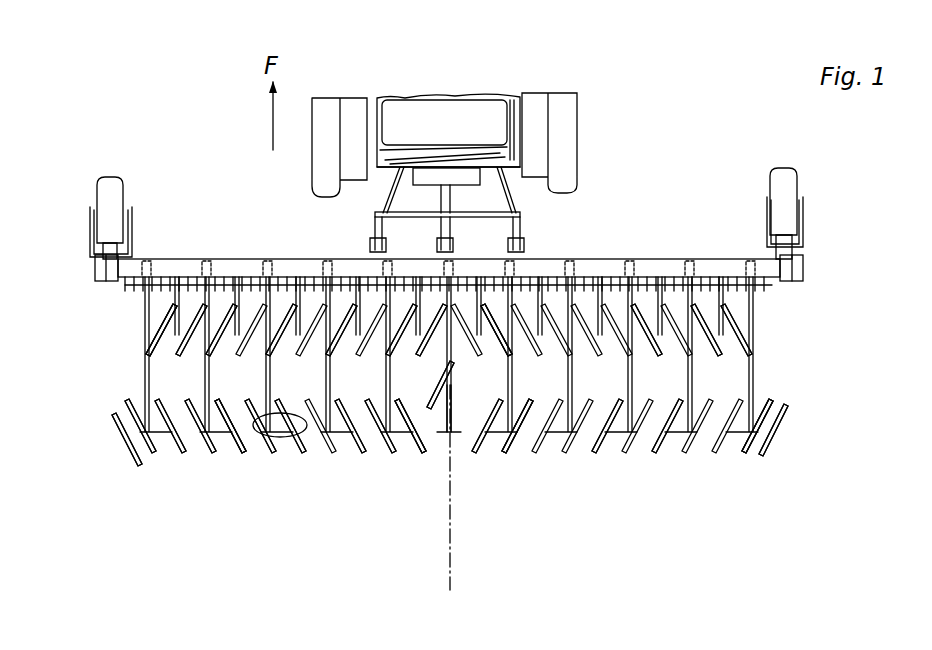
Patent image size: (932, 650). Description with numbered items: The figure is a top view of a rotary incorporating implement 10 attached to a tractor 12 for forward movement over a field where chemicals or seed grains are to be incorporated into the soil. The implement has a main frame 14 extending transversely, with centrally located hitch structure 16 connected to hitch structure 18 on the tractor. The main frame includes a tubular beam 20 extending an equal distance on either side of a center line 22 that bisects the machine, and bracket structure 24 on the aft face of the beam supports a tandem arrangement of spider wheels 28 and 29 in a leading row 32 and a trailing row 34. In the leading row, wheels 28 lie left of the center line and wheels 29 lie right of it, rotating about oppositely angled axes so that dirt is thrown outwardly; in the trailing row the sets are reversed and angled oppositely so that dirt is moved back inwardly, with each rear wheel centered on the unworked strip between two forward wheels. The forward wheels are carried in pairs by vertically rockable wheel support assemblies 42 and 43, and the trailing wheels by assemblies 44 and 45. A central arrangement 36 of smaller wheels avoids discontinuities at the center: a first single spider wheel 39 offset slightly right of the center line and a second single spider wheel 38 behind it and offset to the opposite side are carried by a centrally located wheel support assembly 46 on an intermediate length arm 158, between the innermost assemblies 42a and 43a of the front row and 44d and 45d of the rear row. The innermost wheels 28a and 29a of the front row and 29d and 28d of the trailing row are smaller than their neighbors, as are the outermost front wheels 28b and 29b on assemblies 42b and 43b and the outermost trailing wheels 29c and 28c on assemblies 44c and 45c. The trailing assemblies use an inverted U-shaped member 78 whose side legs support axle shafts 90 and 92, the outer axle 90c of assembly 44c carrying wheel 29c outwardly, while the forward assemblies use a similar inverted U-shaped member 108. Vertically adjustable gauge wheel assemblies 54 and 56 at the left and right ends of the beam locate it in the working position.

The rotary incorporating implement 10 is at (201, 180).
The tractor 12 is at (609, 114).
The main frame 14 is at (88, 265).
The hitch structure 16 is at (530, 250).
The hitch structure 18 is at (520, 190).
The tubular beam 20 is at (252, 258).
The center line 22 is at (452, 530).
The bracket structure 24 is at (222, 268).
The spider wheels 28 is at (222, 350).
The innermost spider wheel 28a is at (429, 280).
The outermost spider wheel 28b is at (147, 342).
The outermost spider wheel 28c is at (771, 441).
The innermost spider wheel 28d is at (471, 452).
The spider wheels 29 is at (490, 301).
The innermost spider wheel 29a is at (492, 338).
The outermost spider wheel 29b is at (760, 328).
The outermost spider wheel 29c is at (148, 460).
The innermost spider wheel 29d is at (445, 452).
The leading row 32 is at (118, 338).
The trailing row 34 is at (84, 441).
The central arrangement 36 is at (435, 528).
The second centrally located single spider wheel 38 is at (441, 385).
The first centrally located single spider wheel 39 is at (464, 280).
The wheel support assemblies 42 is at (213, 348).
The innermost wheel assembly 42a is at (398, 302).
The outermost wheel assembly 42b is at (157, 315).
The wheel support assemblies 43 is at (611, 340).
The innermost wheel assembly 43a is at (590, 284).
The outermost wheel assembly 43b is at (764, 314).
The wheel support assemblies 44 is at (226, 452).
The outermost trailing wheel assembly 44c is at (124, 443).
The innermost trailing wheel assembly 44d is at (396, 466).
The wheel support assemblies 45 is at (674, 437).
The outermost trailing wheel assembly 45c is at (795, 425).
The innermost trailing wheel assembly 45d is at (508, 462).
The centrally located wheel support assembly 46 is at (460, 388).
The gauge wheel assembly 54 is at (133, 222).
The gauge wheel assembly 56 is at (762, 212).
The inverted U-shaped member 78 is at (224, 470).
The axle shaft 90 is at (346, 447).
The outer axle 90c is at (127, 416).
The axle shaft 92 is at (283, 445).
The inverted U-shaped member 108 is at (265, 350).
The intermediate length arm 158 is at (466, 442).